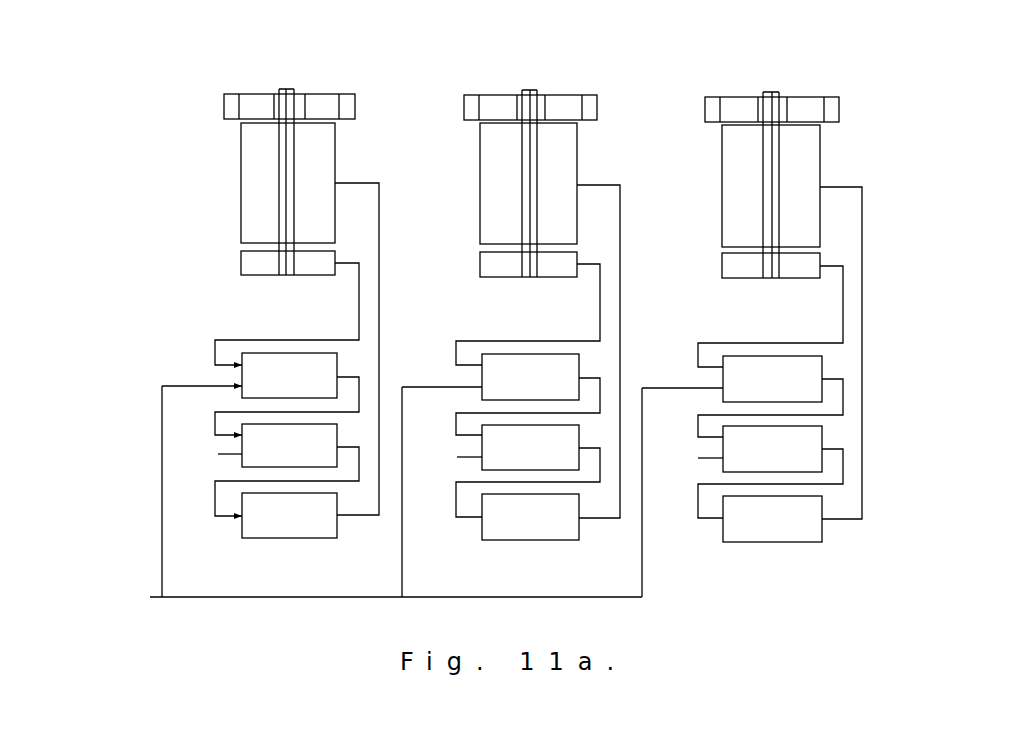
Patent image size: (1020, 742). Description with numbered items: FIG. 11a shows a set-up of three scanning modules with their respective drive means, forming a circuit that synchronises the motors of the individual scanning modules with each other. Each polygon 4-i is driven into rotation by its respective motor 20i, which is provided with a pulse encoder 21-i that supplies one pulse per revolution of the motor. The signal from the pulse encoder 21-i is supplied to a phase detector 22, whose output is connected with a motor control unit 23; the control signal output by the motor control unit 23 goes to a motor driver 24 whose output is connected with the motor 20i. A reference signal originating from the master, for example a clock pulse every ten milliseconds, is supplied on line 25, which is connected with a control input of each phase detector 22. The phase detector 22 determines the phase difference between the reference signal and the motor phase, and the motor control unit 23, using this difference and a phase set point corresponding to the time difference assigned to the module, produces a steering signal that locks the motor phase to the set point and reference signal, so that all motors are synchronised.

The polygon 4-i is at (262, 94).
The motor 20i is at (241, 168).
The pulse encoder 21-i is at (255, 275).
The phase detector 22 is at (337, 362).
The motor control unit 23 is at (337, 432).
The motor driver 24 is at (337, 502).
The line 25 is at (150, 597).